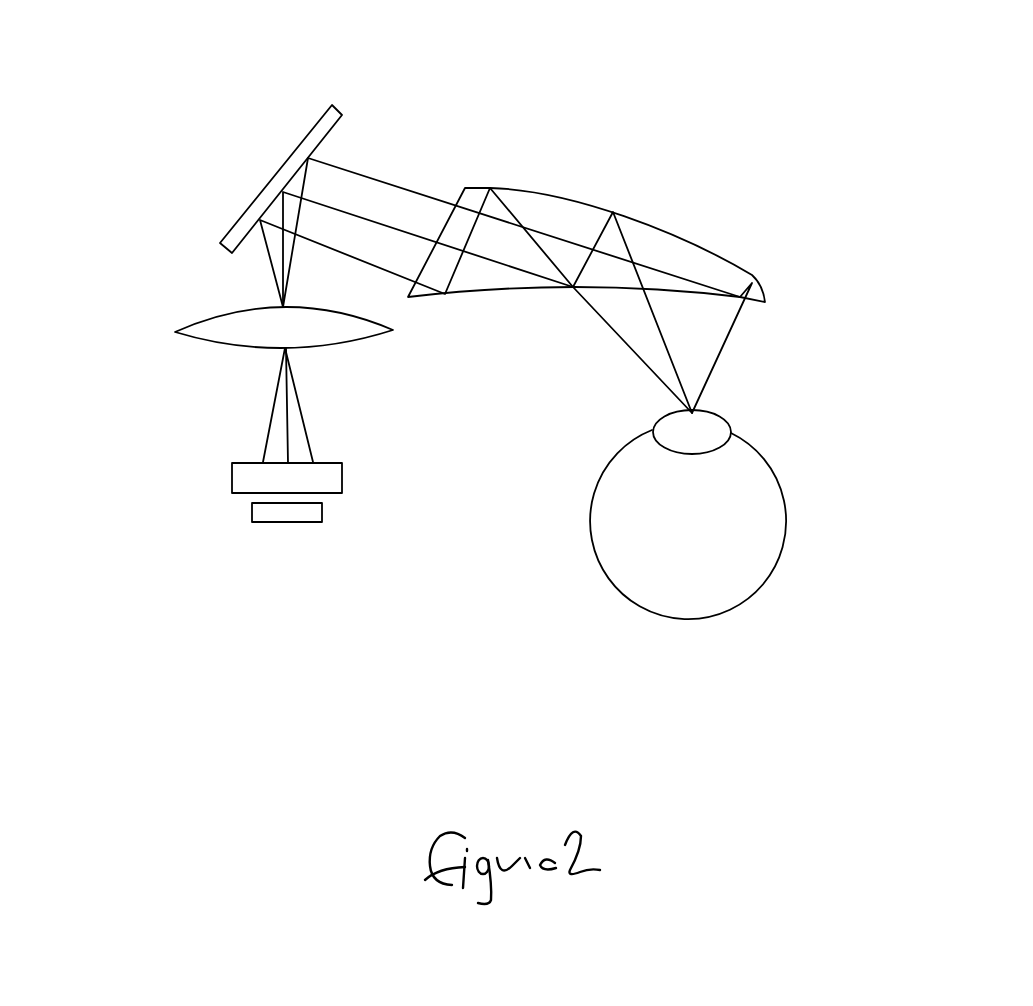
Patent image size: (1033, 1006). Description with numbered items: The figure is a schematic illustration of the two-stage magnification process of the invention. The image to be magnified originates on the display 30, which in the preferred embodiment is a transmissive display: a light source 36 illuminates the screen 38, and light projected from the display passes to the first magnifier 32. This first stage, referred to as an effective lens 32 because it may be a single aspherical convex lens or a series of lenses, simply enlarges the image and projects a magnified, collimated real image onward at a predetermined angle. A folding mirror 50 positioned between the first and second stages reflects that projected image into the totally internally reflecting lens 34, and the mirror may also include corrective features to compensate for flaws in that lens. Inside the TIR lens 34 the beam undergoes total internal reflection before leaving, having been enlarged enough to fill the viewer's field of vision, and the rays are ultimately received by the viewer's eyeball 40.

The display 30 is at (261, 526).
The first magnifier 32 is at (65, 417).
The totally internally reflecting (TIR) lens 34 is at (815, 3).
The light source 36 is at (340, 548).
The screen 38 is at (420, 460).
The viewer's eyeball 40 is at (891, 505).
The mirror 50 is at (101, 254).